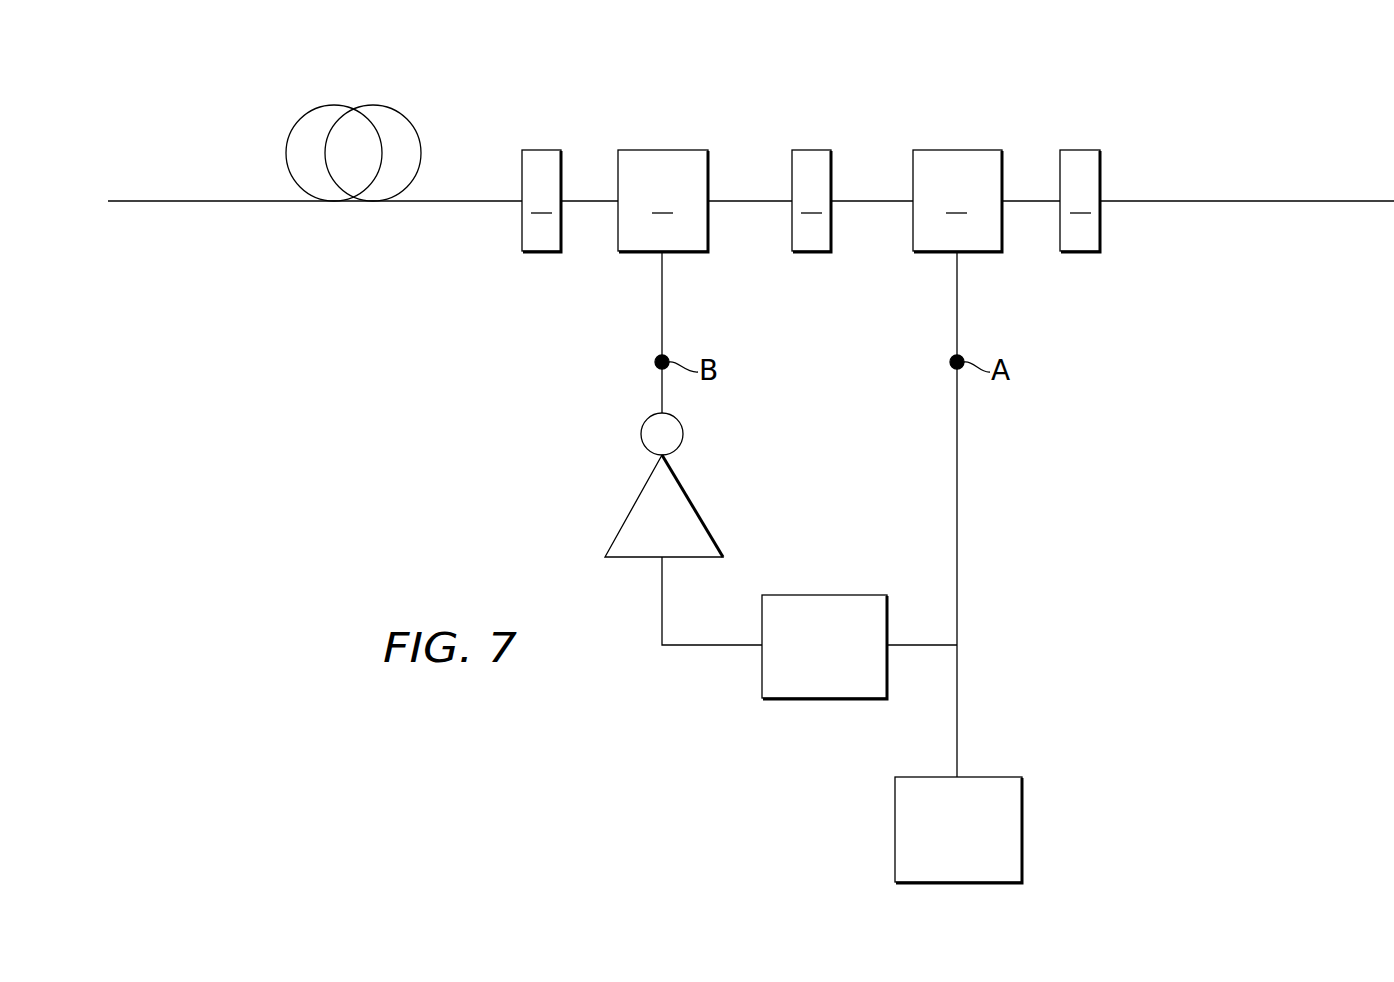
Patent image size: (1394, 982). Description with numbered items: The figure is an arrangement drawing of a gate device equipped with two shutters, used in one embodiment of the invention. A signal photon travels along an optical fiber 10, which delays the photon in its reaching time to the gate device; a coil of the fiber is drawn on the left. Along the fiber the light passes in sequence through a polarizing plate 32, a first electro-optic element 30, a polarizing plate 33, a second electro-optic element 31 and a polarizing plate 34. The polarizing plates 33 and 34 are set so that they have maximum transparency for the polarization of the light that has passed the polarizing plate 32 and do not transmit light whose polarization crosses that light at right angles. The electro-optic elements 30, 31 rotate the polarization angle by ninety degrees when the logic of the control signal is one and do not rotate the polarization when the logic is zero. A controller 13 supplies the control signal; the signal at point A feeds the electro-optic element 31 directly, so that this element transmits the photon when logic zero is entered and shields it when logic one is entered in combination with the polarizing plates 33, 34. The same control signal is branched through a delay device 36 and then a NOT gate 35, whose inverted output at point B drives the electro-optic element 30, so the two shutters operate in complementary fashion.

The optical fiber 10 is at (213, 201).
The polarizing plate 32 is at (543, 243).
The electro-optic element 30 is at (661, 158).
The polarizing plate 33 is at (813, 243).
The electro-optic element 31 is at (956, 158).
The polarizing plate 34 is at (1082, 243).
The NOT gate 35 is at (674, 533).
The delay device 36 is at (830, 595).
The controller 13 is at (1012, 800).